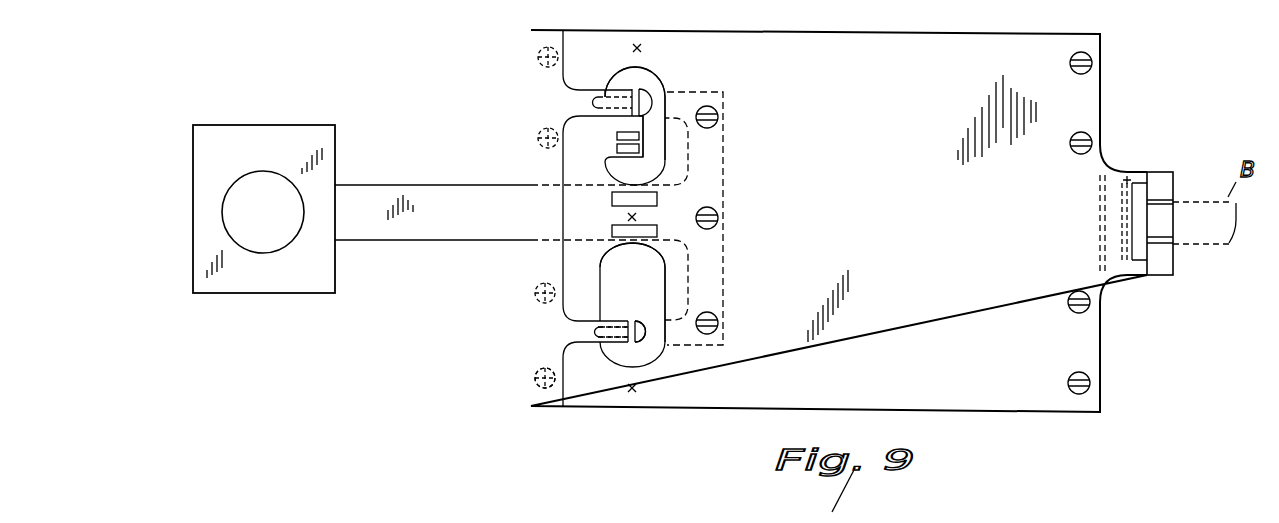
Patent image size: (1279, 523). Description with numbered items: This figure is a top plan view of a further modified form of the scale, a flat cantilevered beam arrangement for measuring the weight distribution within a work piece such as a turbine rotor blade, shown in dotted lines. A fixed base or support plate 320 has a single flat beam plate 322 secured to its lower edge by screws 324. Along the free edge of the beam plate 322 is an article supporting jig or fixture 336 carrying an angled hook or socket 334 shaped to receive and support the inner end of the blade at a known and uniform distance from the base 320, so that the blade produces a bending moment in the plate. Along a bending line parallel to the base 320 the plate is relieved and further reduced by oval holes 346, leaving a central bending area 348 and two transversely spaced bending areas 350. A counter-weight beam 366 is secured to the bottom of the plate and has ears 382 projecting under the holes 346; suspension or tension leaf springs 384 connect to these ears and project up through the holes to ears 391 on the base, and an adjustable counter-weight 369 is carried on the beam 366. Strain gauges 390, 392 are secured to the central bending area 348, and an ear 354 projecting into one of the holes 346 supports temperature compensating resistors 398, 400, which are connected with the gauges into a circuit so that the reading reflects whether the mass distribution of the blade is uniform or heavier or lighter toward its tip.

The base or support plate 320 is at (540, 352).
The beam plate 322 is at (953, 398).
The screws 324 is at (530, 385).
The hook or socket 334 is at (1160, 267).
The article supporting jig or fixture 336 is at (1065, 245).
The oval holes 346 is at (663, 80).
The central bending area 348 is at (640, 215).
The bending areas 350 is at (645, 43).
The ear 354 is at (641, 148).
The counter-weight beam 366 is at (437, 227).
The adjustable counter-weight 369 is at (310, 287).
The ears 382 is at (653, 337).
The suspension or tension leaf springs 384 is at (640, 321).
The strain gauge 390 is at (657, 197).
The ears 391 is at (580, 330).
The strain gauge 392 is at (657, 237).
The temperature compensating resistor 398 is at (613, 135).
The temperature compensating resistor 400 is at (615, 148).